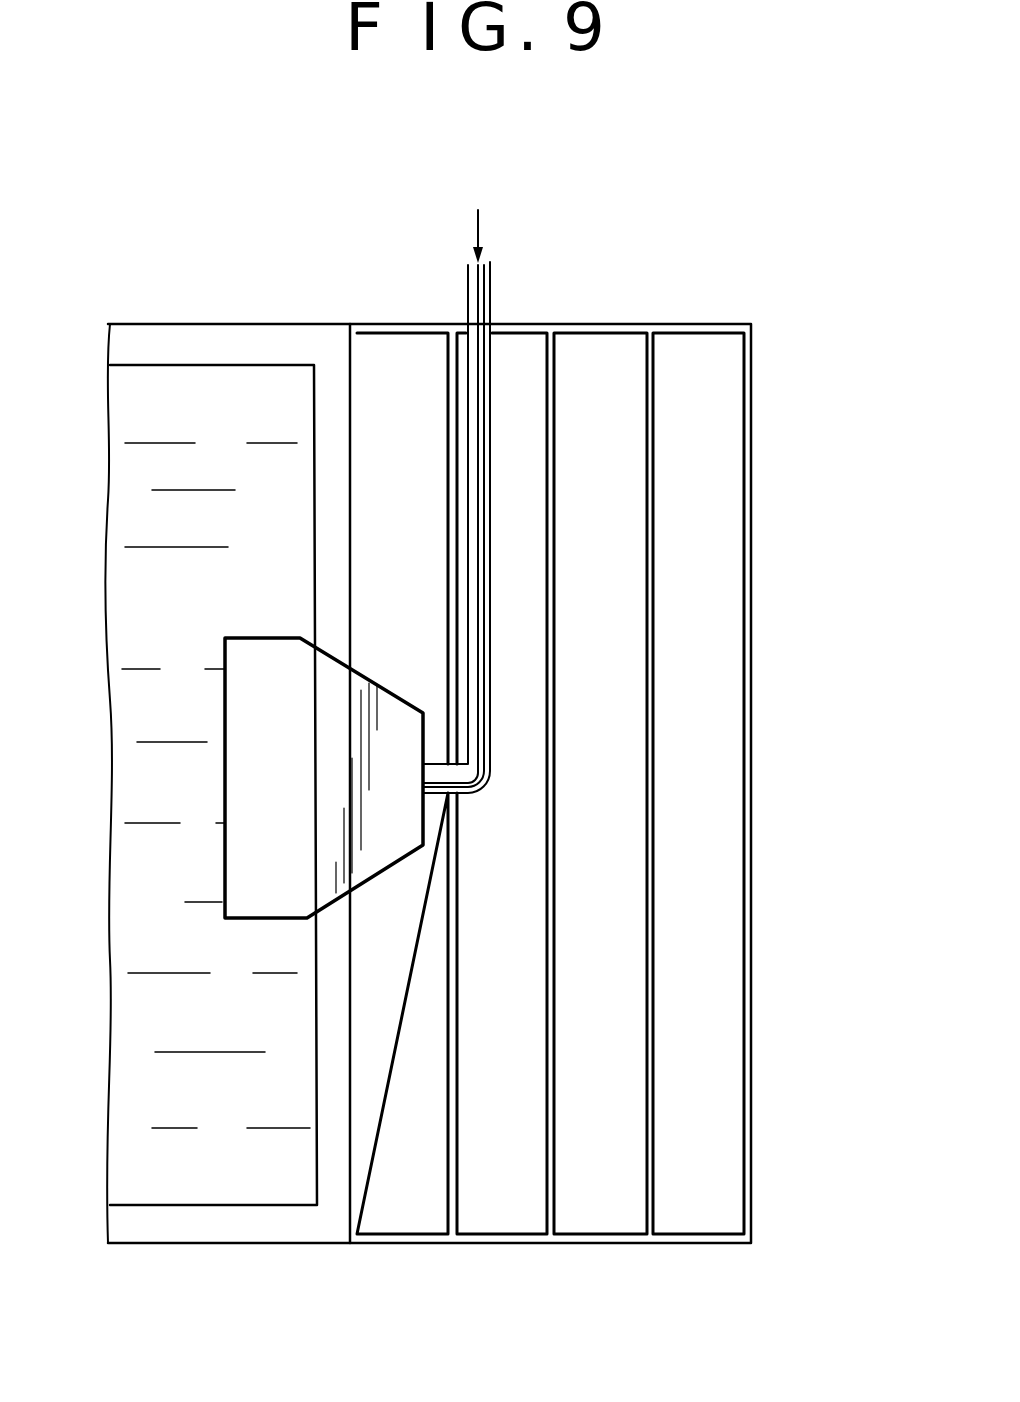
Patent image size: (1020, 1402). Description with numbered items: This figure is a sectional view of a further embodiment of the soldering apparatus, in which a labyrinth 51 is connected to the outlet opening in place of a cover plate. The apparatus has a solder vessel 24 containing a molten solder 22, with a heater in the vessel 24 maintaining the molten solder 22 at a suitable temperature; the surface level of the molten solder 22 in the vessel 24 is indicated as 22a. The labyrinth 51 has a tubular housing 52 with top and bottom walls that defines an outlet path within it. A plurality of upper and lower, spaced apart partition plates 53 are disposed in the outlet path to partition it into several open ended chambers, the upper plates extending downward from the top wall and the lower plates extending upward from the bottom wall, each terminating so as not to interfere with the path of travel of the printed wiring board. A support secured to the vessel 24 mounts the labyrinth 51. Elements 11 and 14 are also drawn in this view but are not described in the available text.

The heat generating component 11 is at (168, 597).
The coolant pipe 14 is at (490, 295).
The molten solder 22 is at (147, 1183).
The surface level of the molten solder 22a is at (228, 1183).
The solder vessel 24 is at (311, 1221).
The labyrinth 51 is at (587, 739).
The tubular housing 52 is at (708, 324).
The partition plates 53 is at (645, 362).